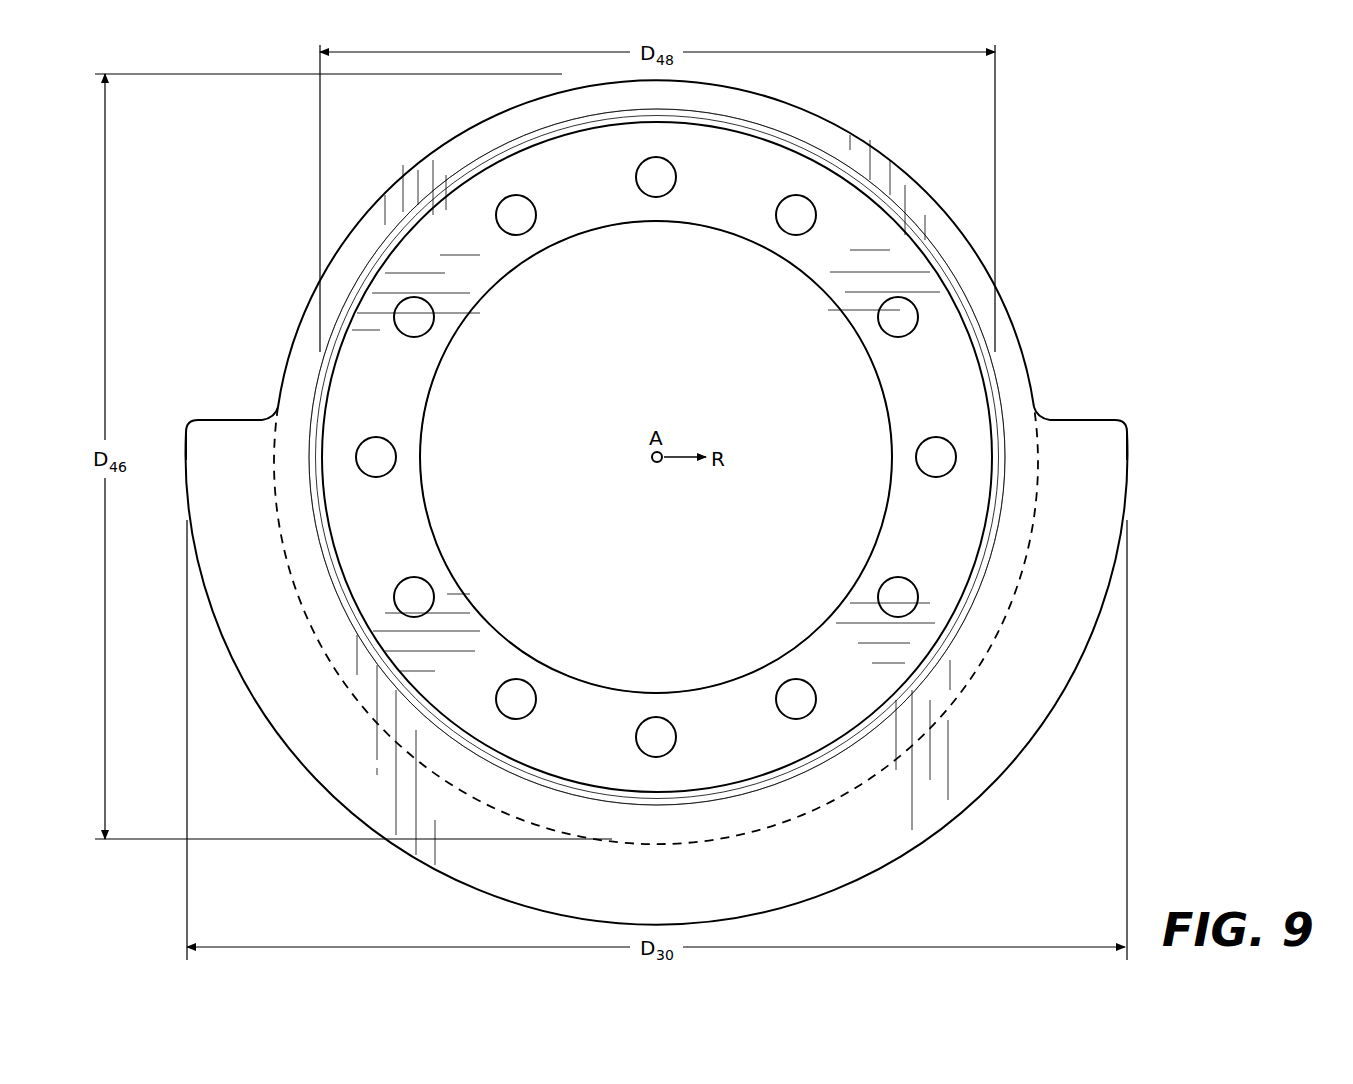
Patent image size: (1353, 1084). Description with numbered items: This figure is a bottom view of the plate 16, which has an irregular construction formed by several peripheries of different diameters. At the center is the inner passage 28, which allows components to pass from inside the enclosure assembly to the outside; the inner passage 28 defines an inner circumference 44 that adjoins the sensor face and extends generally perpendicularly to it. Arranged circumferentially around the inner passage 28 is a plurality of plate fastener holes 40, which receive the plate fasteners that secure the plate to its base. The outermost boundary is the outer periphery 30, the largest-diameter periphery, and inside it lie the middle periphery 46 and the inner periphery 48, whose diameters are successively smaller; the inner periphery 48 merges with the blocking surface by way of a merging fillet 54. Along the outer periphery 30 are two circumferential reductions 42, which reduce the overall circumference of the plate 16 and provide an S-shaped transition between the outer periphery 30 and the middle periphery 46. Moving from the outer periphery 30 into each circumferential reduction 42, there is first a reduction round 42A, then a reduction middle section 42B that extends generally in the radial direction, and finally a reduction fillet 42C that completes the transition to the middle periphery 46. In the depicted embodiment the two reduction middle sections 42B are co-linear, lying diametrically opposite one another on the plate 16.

The plate 16 is at (1028, 810).
The inner passage 28 is at (888, 410).
The outer periphery 30 is at (275, 731).
The plate fastener holes 40 is at (667, 170).
The circumferential reductions 42 is at (238, 418).
The reduction round 42A is at (193, 429).
The reduction middle section 42B is at (1077, 420).
The reduction fillet 42C is at (274, 406).
The inner circumference 44 is at (427, 500).
The middle periphery 46 is at (478, 121).
The inner periphery 48 is at (923, 247).
The merging fillet 54 is at (943, 640).